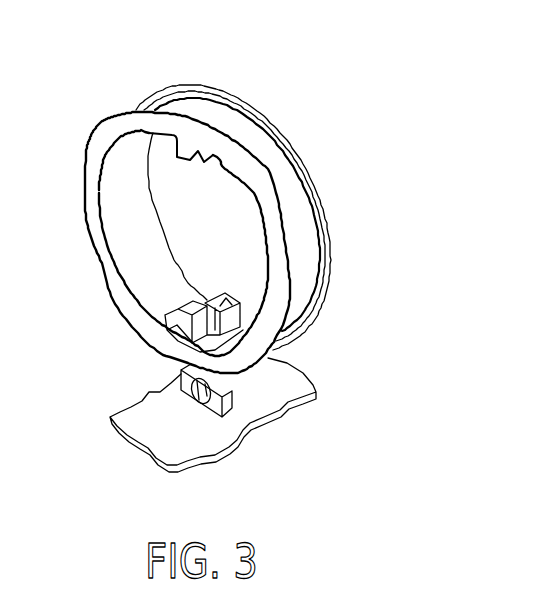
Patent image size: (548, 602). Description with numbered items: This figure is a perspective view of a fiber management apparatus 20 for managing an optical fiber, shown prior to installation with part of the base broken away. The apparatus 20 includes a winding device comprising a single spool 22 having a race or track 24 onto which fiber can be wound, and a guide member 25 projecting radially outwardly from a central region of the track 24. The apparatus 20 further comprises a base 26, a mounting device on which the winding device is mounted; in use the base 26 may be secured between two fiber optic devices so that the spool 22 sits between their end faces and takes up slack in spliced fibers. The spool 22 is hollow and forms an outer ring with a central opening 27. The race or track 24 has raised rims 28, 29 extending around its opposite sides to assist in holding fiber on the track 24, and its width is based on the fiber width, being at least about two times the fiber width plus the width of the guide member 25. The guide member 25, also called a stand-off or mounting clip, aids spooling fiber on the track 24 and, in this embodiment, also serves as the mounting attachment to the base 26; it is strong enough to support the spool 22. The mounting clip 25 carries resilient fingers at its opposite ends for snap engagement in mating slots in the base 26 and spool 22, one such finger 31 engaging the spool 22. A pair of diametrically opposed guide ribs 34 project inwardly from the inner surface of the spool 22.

The fiber management apparatus 20 is at (221, 282).
The spool 22 is at (265, 125).
The race or track 24 is at (274, 187).
The guide member 25 is at (228, 389).
The base 26 is at (193, 426).
The central opening 27 is at (203, 242).
The raised rim 28 is at (113, 116).
The raised rim 29 is at (194, 86).
The resilient finger 31 is at (183, 311).
The guide ribs 34 is at (177, 158).